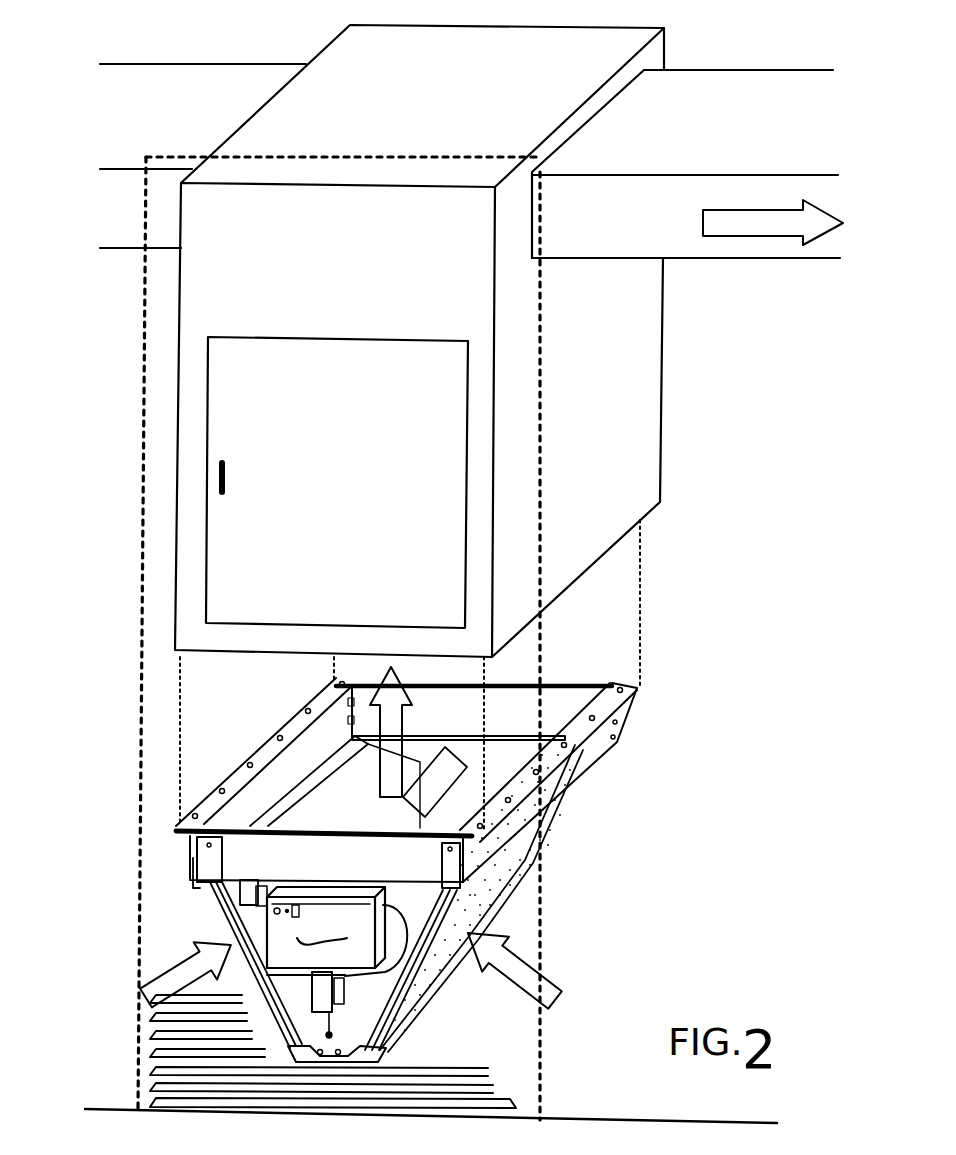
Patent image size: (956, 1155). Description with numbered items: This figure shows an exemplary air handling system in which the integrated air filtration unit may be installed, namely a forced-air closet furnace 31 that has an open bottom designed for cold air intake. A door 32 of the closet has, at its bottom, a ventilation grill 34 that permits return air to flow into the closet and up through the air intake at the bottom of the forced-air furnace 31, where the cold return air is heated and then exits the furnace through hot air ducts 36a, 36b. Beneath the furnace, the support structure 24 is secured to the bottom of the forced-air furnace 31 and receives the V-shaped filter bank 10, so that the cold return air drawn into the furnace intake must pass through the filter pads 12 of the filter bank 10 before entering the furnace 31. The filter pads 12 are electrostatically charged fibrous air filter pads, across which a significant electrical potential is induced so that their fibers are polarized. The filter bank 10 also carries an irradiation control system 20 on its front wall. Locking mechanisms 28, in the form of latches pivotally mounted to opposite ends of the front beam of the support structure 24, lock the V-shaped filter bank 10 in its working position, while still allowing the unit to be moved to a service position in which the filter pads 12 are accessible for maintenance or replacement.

The V-shaped filter bank unit 10 is at (497, 883).
The filter pads 12 is at (545, 818).
The irradiation control system 20 is at (345, 948).
The support structure 24 is at (632, 707).
The locking mechanisms 28 is at (212, 884).
The forced-air closet furnace 31 is at (345, 287).
The door 32 is at (142, 533).
The ventilation grill 34 is at (142, 1041).
The hot air duct 36a is at (687, 164).
The hot air duct 36b is at (203, 156).